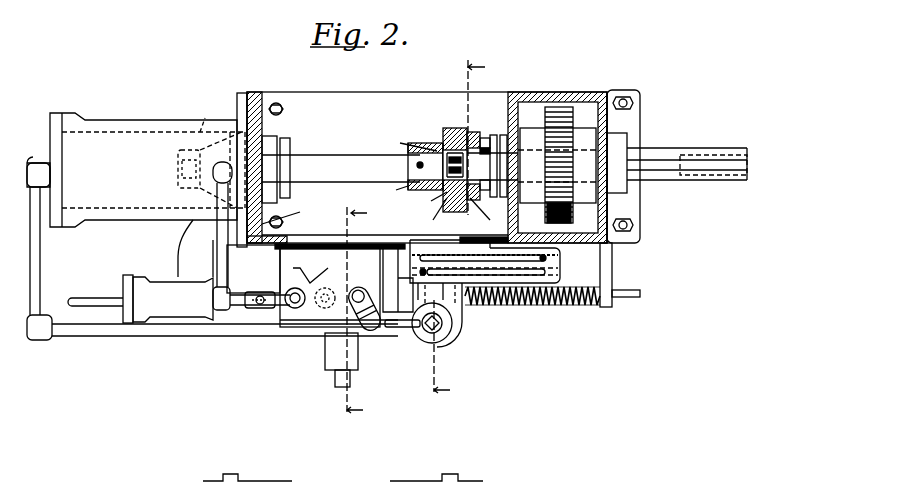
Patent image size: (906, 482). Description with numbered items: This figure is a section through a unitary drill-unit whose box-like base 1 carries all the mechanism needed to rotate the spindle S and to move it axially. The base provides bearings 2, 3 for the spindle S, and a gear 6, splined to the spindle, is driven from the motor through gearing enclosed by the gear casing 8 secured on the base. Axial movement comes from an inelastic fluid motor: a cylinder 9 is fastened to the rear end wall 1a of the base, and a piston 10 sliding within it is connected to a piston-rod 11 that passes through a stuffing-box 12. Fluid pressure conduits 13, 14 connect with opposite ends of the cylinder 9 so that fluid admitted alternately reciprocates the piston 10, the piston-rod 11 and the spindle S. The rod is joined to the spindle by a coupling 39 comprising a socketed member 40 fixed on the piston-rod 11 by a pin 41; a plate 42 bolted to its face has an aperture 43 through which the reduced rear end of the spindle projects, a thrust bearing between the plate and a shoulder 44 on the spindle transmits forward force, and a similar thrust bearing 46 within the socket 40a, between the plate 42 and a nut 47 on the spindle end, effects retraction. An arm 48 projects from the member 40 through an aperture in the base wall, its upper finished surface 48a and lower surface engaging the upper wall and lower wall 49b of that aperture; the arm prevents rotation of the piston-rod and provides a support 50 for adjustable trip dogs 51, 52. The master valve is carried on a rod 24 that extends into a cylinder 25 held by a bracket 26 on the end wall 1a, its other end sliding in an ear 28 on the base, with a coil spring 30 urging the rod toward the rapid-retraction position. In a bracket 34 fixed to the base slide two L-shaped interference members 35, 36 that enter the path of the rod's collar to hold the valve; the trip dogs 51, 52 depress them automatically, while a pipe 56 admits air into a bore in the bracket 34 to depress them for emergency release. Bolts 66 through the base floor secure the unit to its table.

The base 1 is at (333, 93).
The rear end wall 1a is at (288, 212).
The bearing 2 is at (533, 130).
The bearing 3 is at (584, 130).
The gear 6 is at (572, 215).
The gear casing 8 is at (359, 320).
The cylinder 9 is at (122, 120).
The piston 10 is at (191, 111).
The piston-rod 11 is at (342, 154).
The stuffing-box 12 is at (289, 152).
The fluid pressure conduit 13 is at (229, 273).
The fluid pressure conduit 14 is at (40, 262).
The rod 24 is at (632, 298).
The cylinder 25 is at (168, 299).
The bracket 26 is at (178, 262).
The ear 28 is at (612, 270).
The coil spring 30 is at (548, 305).
The bracket 34 is at (397, 246).
The interference member 35 is at (462, 320).
The interference member 36 is at (416, 336).
The coupling 39 is at (430, 132).
The socketed member 40 is at (442, 144).
The socket 40a is at (391, 188).
The pin 41 is at (408, 138).
The plate 42 is at (471, 133).
The aperture 43 is at (476, 148).
The shoulder 44 is at (498, 166).
The thrust bearing 46 is at (431, 215).
The nut 47 is at (417, 167).
The arm 48 is at (431, 203).
The upper finished surface 48a is at (491, 212).
The lower wall 49b is at (315, 244).
The support 50 is at (557, 273).
The trip dog 51 is at (548, 258).
The trip dog 52 is at (97, 298).
The pipe 56 is at (402, 329).
The bolt 66 is at (279, 103).
The spindle S is at (680, 160).